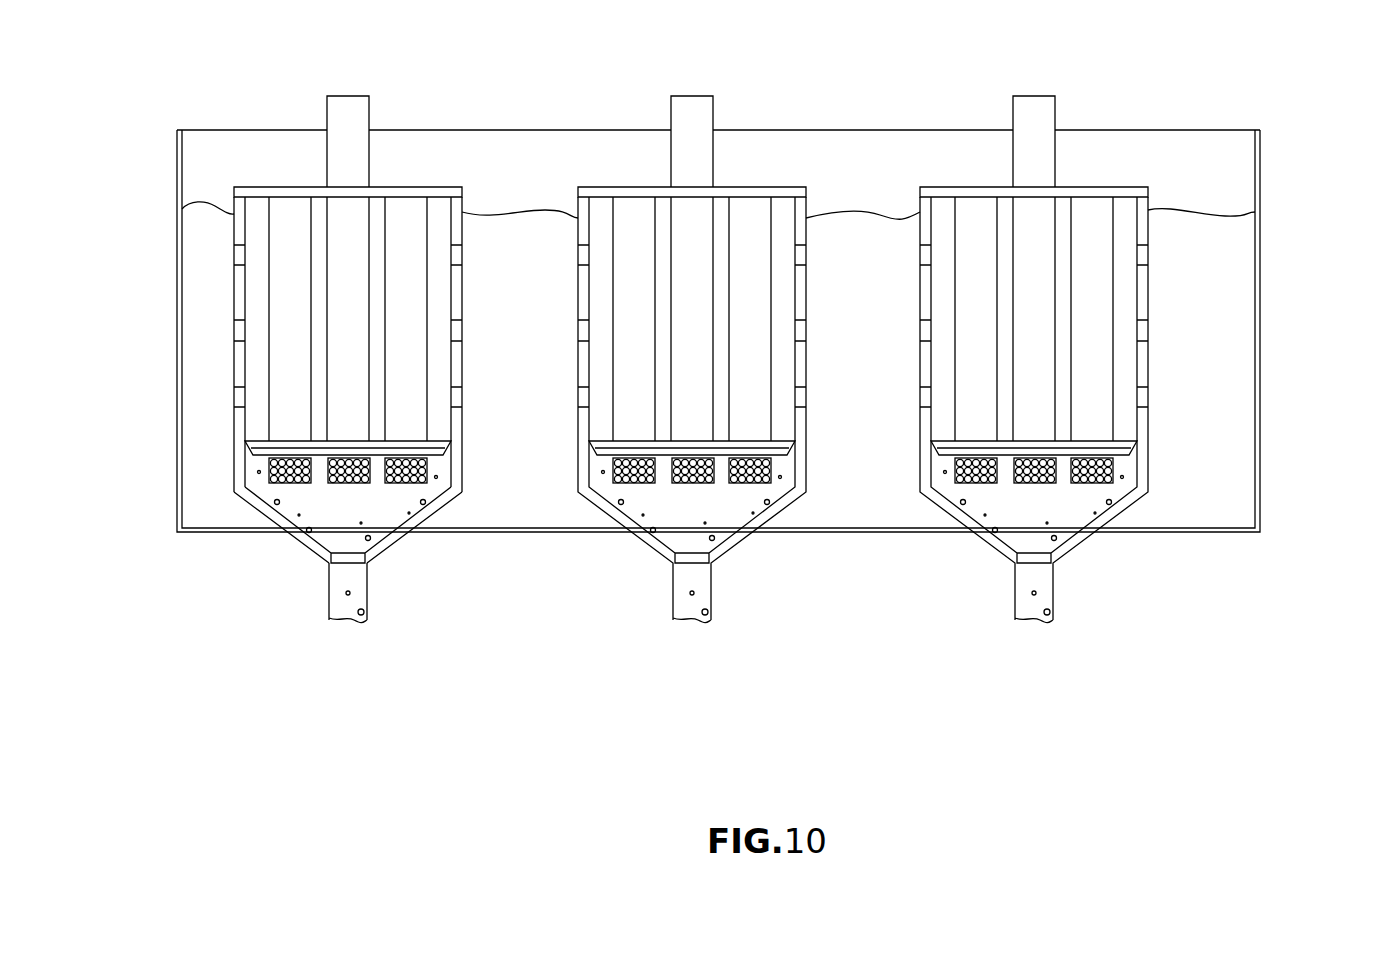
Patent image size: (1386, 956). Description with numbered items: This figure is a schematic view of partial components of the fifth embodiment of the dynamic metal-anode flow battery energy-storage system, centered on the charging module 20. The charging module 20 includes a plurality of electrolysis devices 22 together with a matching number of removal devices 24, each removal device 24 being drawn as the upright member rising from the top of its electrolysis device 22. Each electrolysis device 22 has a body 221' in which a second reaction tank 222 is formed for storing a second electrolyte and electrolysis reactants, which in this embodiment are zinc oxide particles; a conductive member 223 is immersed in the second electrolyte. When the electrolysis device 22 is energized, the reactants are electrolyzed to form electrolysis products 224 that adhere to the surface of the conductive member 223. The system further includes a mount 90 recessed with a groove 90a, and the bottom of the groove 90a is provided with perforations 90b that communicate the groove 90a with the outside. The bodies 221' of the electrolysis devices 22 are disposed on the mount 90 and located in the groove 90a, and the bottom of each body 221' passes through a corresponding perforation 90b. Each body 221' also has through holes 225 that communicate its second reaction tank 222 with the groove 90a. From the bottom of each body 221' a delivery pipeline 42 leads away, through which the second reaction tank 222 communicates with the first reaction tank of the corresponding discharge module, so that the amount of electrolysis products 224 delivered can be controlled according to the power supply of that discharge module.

The charging module 20 is at (313, 338).
The removal device 24 is at (371, 117).
The electrolysis device 22 is at (313, 425).
The body 221' is at (288, 344).
The second reaction tank 222 is at (260, 338).
The conductive member 223 is at (422, 323).
The through holes 225 is at (238, 403).
The electrolysis products 224 is at (277, 503).
The delivery pipeline 42 is at (370, 577).
The mount 90 is at (1260, 150).
The groove 90a is at (1213, 356).
The perforations 90b is at (280, 532).